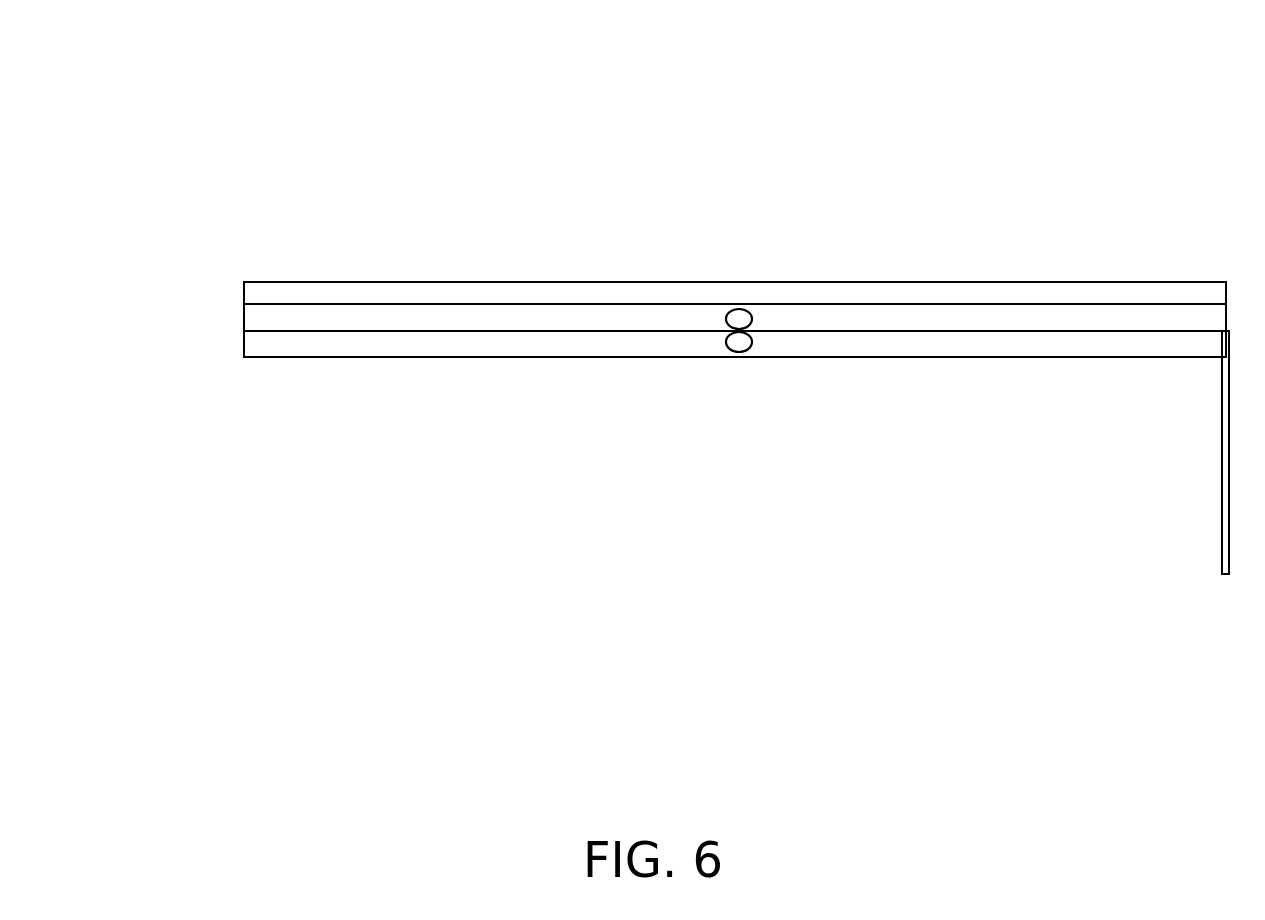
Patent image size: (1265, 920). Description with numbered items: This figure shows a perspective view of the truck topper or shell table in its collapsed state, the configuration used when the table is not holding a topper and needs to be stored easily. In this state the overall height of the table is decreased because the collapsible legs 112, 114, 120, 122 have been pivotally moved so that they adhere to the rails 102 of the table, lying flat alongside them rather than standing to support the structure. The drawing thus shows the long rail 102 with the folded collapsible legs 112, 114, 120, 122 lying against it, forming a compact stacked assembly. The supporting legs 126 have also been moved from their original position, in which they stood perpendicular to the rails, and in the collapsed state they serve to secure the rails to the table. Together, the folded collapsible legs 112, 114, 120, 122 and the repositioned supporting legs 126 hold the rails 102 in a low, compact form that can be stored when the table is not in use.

The rail 102 is at (400, 288).
The collapsible leg 112 is at (305, 321).
The collapsible leg 114 is at (739, 319).
The collapsible leg 120 is at (278, 343).
The collapsible leg 122 is at (739, 342).
The supporting leg 126 is at (1222, 534).